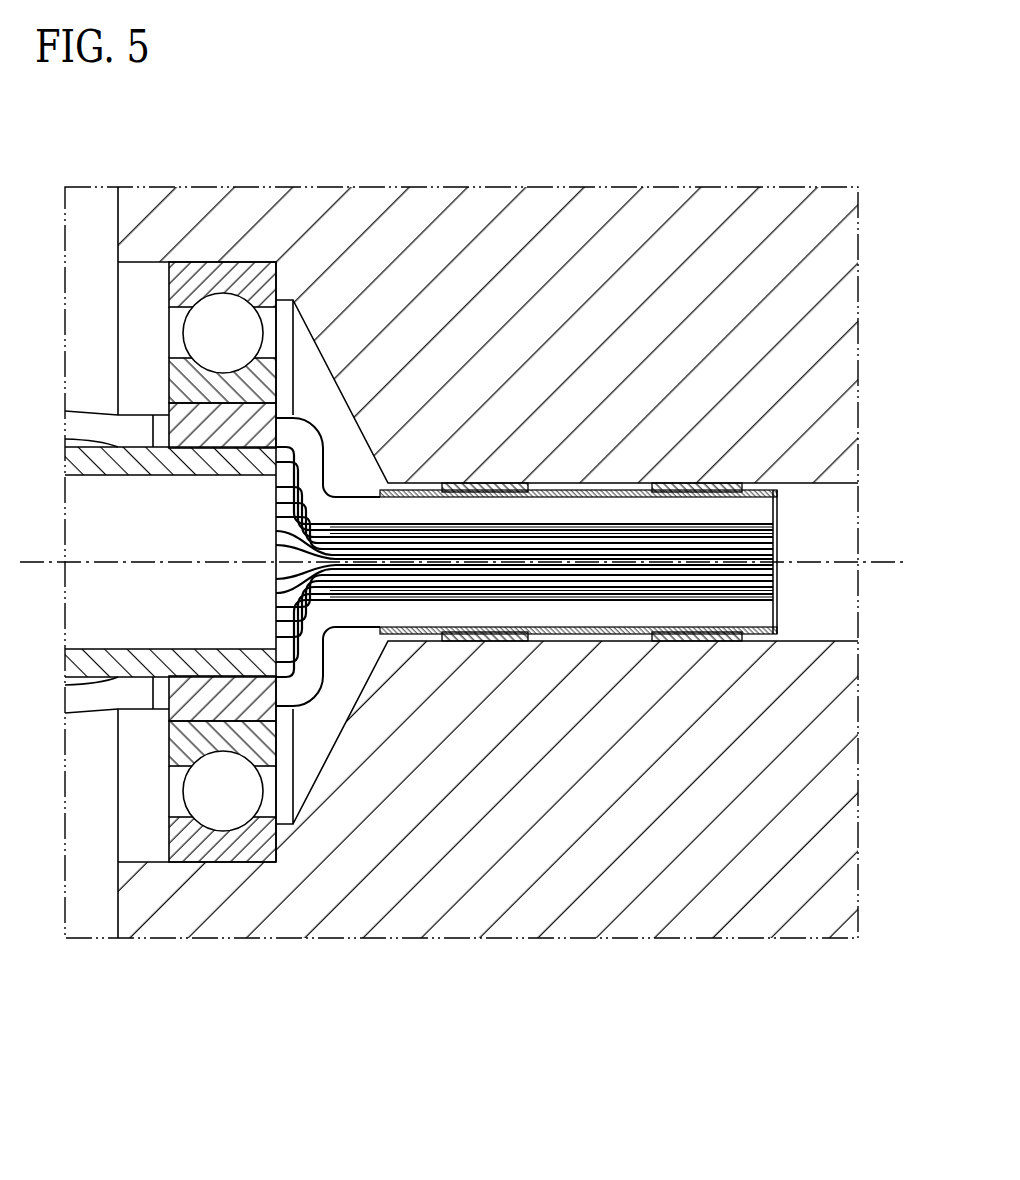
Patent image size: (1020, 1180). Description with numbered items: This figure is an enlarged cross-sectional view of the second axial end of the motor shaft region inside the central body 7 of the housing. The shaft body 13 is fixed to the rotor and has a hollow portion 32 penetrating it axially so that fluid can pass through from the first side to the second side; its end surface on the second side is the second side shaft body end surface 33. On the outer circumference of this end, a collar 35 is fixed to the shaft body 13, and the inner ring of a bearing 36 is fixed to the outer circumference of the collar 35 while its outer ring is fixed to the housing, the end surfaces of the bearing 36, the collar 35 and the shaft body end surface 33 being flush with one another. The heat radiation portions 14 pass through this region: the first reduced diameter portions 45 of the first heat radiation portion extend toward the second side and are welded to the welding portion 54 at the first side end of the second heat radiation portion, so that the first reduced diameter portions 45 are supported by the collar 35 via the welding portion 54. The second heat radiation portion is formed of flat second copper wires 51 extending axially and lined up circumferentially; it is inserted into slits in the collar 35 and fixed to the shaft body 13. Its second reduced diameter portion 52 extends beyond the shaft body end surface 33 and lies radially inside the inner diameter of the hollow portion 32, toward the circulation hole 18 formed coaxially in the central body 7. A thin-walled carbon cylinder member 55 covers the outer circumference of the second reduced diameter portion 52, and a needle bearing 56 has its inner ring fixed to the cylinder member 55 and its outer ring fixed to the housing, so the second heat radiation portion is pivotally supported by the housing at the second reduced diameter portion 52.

The central body 7 is at (580, 795).
The shaft body 13 is at (118, 663).
The heat radiation portions 14 is at (349, 645).
The circulation hole 18 is at (813, 640).
The hollow portion 32 is at (100, 648).
The second side shaft body end surface 33 is at (293, 670).
The collar 35 is at (230, 427).
The bearing 36 is at (223, 322).
The first reduced diameter portions 45 is at (91, 423).
The second copper wires 51 is at (312, 467).
The second reduced diameter portion 52 is at (590, 508).
The welding portion 54 is at (138, 432).
The cylinder member 55 is at (758, 492).
The needle bearing 56 is at (707, 483).